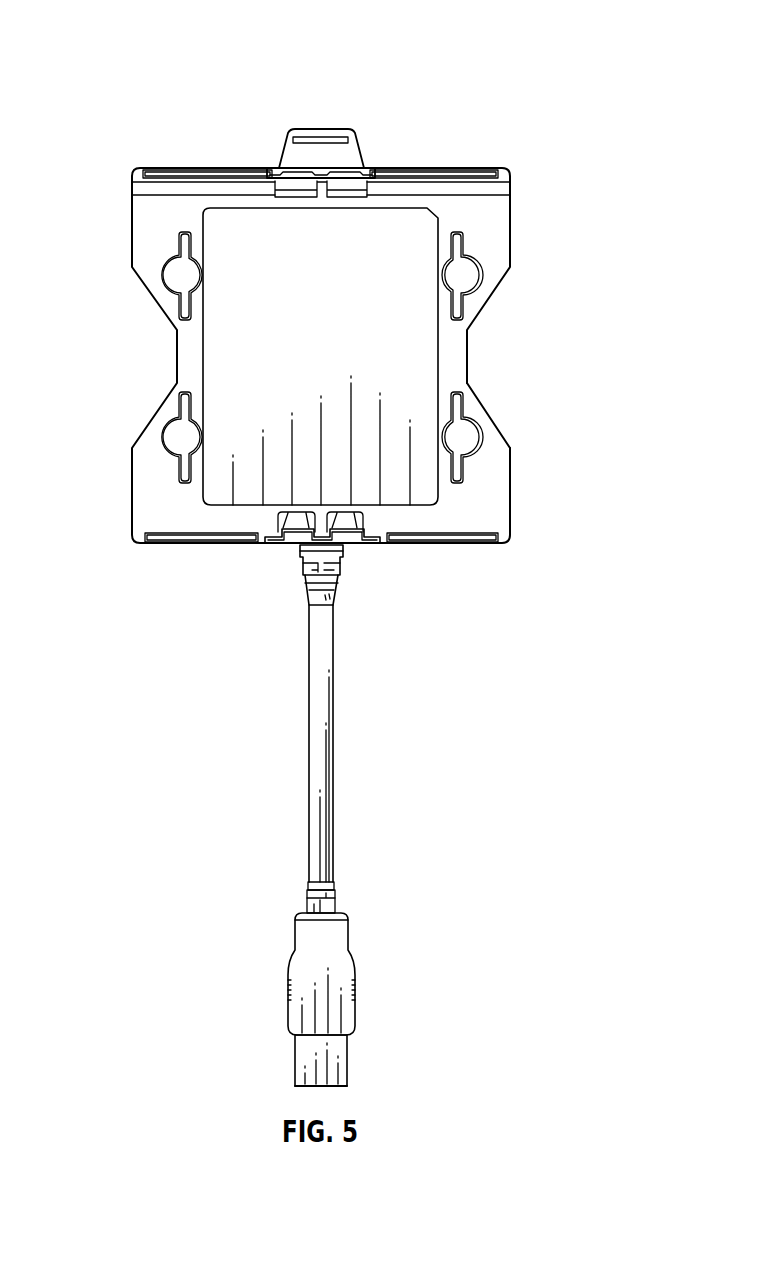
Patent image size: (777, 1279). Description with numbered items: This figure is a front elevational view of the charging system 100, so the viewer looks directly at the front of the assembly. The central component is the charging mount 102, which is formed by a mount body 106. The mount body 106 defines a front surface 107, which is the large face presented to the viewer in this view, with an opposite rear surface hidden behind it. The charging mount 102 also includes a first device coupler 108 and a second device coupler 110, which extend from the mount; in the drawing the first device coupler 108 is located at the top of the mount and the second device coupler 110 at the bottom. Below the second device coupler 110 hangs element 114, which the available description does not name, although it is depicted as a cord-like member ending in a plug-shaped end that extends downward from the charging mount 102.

The charging system 100 is at (113, 44).
The charging mount 102 is at (519, 239).
The mount body 106 is at (488, 415).
The front surface 107 is at (483, 512).
The first device coupler 108 is at (322, 129).
The second device coupler 110 is at (353, 547).
The cable 114 is at (347, 793).